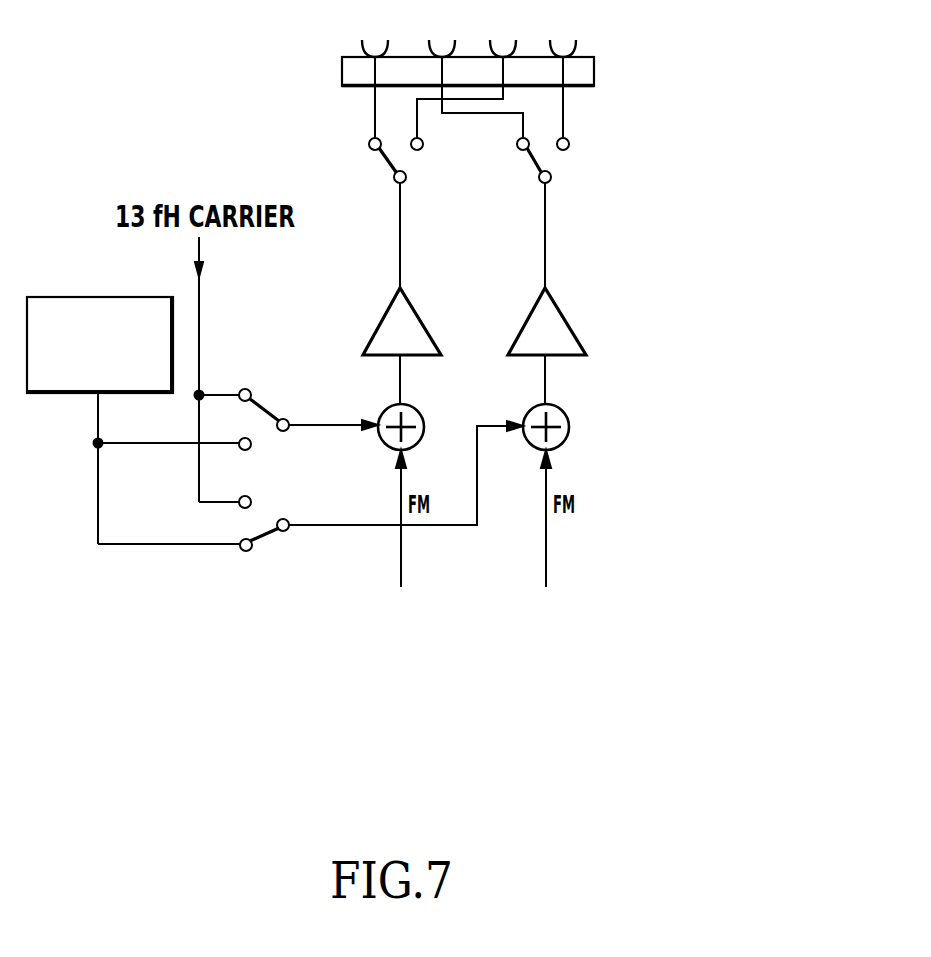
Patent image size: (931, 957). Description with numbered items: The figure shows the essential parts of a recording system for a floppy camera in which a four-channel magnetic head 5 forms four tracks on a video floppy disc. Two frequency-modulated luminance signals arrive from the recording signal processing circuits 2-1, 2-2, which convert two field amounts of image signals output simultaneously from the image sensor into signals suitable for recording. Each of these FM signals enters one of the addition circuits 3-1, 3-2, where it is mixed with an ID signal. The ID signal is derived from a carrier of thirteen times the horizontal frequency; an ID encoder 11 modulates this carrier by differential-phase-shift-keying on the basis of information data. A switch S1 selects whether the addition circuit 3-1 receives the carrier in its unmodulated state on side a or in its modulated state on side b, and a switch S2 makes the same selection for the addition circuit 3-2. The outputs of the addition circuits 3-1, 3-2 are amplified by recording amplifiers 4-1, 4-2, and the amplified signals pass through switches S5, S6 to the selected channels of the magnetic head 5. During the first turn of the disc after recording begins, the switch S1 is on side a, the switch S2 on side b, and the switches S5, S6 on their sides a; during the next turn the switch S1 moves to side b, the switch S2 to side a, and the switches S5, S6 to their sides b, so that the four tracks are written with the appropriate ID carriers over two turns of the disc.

The magnetic head 5 is at (594, 68).
The ID encoder 11 is at (58, 396).
The switch S1 is at (303, 409).
The switch S2 is at (376, 499).
The switch S5 is at (396, 205).
The switch S6 is at (543, 205).
The addition circuit 3-1 is at (390, 406).
The addition circuit 3-2 is at (532, 408).
The recording amplifier 4-1 is at (378, 328).
The recording amplifier 4-2 is at (560, 316).
The recording signal processing circuit 2-1 is at (358, 667).
The recording signal processing circuit 2-2 is at (593, 667).